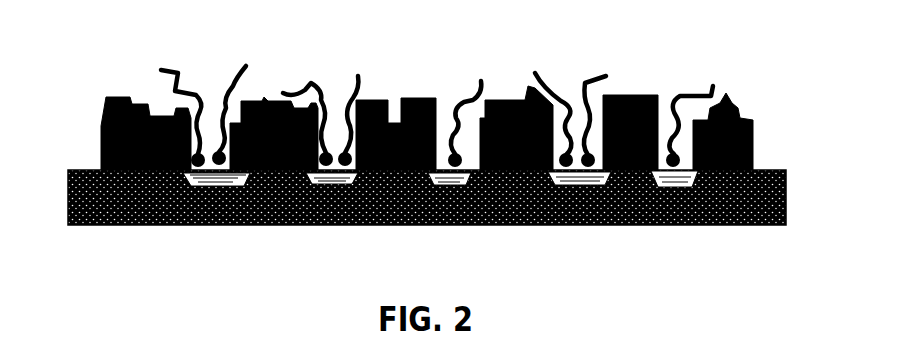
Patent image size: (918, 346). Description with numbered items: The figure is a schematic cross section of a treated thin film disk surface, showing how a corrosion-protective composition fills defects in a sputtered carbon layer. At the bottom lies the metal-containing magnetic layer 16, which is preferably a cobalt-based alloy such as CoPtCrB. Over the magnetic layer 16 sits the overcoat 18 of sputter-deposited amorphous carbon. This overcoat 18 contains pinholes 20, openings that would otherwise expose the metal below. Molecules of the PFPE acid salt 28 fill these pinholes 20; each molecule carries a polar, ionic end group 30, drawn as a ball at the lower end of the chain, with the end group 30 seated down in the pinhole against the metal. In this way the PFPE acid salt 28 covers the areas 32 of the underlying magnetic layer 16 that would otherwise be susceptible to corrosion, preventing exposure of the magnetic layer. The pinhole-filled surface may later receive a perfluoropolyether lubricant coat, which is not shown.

The magnetic layer 16 is at (778, 192).
The overcoat 18 is at (747, 135).
The pinholes 20 is at (682, 88).
The PFPE acid salt 28 is at (686, 86).
The polar, ionic end group 30 is at (667, 147).
The areas 32 is at (658, 217).